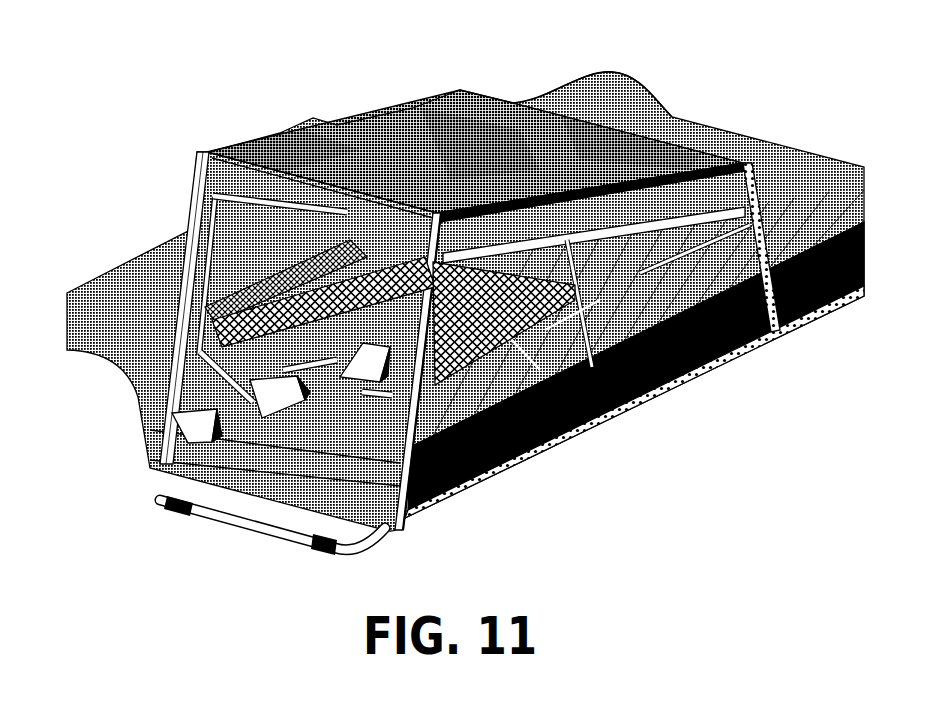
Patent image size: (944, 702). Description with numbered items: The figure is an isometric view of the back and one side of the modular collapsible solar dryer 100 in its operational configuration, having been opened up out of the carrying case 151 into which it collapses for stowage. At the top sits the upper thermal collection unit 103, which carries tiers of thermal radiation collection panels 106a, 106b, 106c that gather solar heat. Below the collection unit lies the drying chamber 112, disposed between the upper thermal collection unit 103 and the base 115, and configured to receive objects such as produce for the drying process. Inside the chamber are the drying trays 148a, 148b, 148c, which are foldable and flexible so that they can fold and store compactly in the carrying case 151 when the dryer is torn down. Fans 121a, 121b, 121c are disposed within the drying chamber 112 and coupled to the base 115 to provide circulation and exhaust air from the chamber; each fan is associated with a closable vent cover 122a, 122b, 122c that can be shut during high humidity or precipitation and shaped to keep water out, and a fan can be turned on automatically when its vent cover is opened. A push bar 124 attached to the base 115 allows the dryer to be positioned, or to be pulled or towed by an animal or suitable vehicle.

The solar dryer system 100 is at (792, 97).
The upper thermal collection unit 103 is at (240, 104).
The thermal radiation collection panel 106a is at (645, 168).
The thermal radiation collection panel 106b is at (515, 173).
The thermal radiation collection panel 106c is at (362, 173).
The drying chamber 112 is at (675, 296).
The base 115 is at (623, 452).
The fan 121a is at (203, 441).
The fan 121b is at (305, 383).
The fan 121c is at (392, 392).
The vent cover 122a is at (178, 431).
The vent cover 122b is at (260, 400).
The vent cover 122c is at (368, 378).
The push bar 124 is at (157, 491).
The drying tray 148a is at (473, 360).
The drying tray 148b is at (337, 303).
The drying tray 148c is at (238, 290).
The carrying case 151 is at (612, 70).